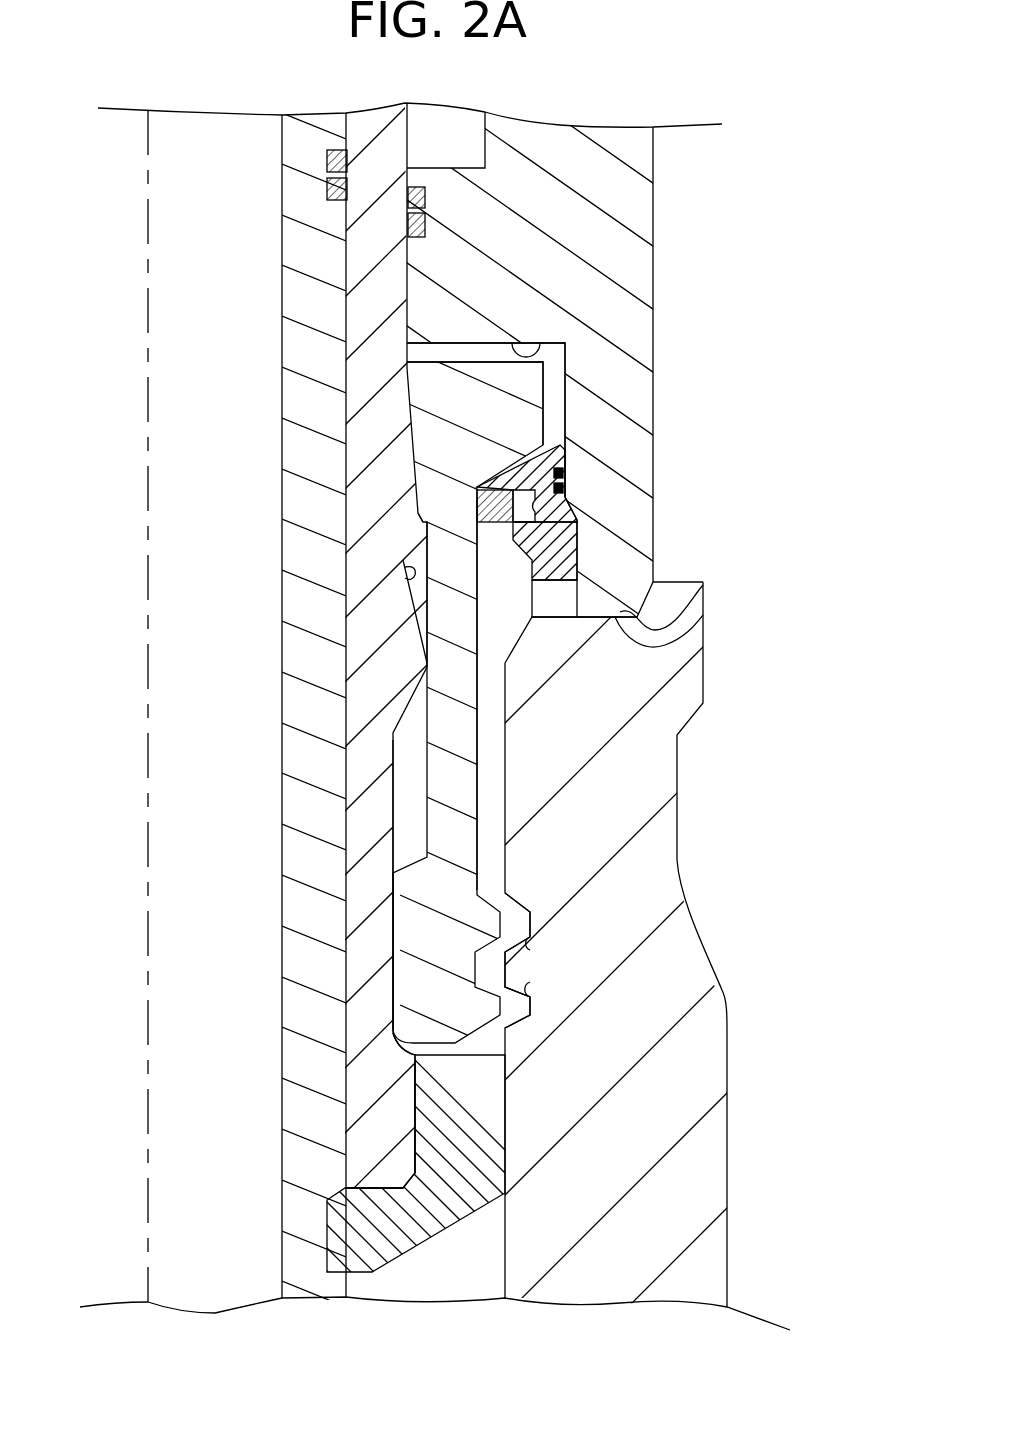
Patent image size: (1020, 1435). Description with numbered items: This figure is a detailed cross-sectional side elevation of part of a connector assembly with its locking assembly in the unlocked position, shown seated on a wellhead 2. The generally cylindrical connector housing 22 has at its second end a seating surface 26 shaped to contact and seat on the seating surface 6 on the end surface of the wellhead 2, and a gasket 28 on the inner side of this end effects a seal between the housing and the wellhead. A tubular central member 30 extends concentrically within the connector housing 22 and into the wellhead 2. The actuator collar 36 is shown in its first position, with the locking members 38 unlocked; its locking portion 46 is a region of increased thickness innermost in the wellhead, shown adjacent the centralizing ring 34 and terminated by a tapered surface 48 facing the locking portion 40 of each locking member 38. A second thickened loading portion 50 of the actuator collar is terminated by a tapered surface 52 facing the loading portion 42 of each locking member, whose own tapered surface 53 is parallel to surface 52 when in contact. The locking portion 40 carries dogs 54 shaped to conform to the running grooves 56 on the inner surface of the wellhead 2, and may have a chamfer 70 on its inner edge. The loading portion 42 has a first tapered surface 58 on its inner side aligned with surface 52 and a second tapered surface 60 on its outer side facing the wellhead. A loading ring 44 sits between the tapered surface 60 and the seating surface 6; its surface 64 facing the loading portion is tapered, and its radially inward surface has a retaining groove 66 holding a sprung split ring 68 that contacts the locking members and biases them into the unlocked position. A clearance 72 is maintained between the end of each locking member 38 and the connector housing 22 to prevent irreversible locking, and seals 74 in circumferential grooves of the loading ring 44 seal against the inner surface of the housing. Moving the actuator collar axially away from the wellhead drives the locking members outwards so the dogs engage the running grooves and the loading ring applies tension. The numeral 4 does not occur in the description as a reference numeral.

The wellhead 2 is at (700, 1213).
The housing 4 is at (690, 693).
The seating surface 6 is at (640, 625).
The connector housing 22 is at (610, 179).
The seating surface 26 is at (700, 582).
The gasket 28 is at (590, 600).
The tubular central member 30 is at (303, 193).
The centralizing ring 34 is at (490, 1160).
The actuator collar 36 is at (330, 825).
The locking members 38 is at (462, 790).
The locking portion 40 is at (410, 950).
The loading portion 42 is at (430, 428).
The loading ring 44 is at (580, 578).
The locking portion 46 is at (365, 1147).
The tapered surface 48 is at (360, 1095).
The loading portion 50 is at (375, 670).
The tapered surface 52 is at (403, 560).
The tapered surface 53 is at (410, 397).
The dogs 54 is at (490, 922).
The running grooves 56 is at (535, 990).
The first tapered surface 58 is at (425, 522).
The second tapered surface 60 is at (553, 442).
The surface 64 is at (565, 447).
The retaining groove 66 is at (567, 474).
The sprung split ring 68 is at (548, 492).
The chamfer 70 is at (392, 1008).
The clearance 72 is at (543, 348).
The seals 74 is at (573, 533).